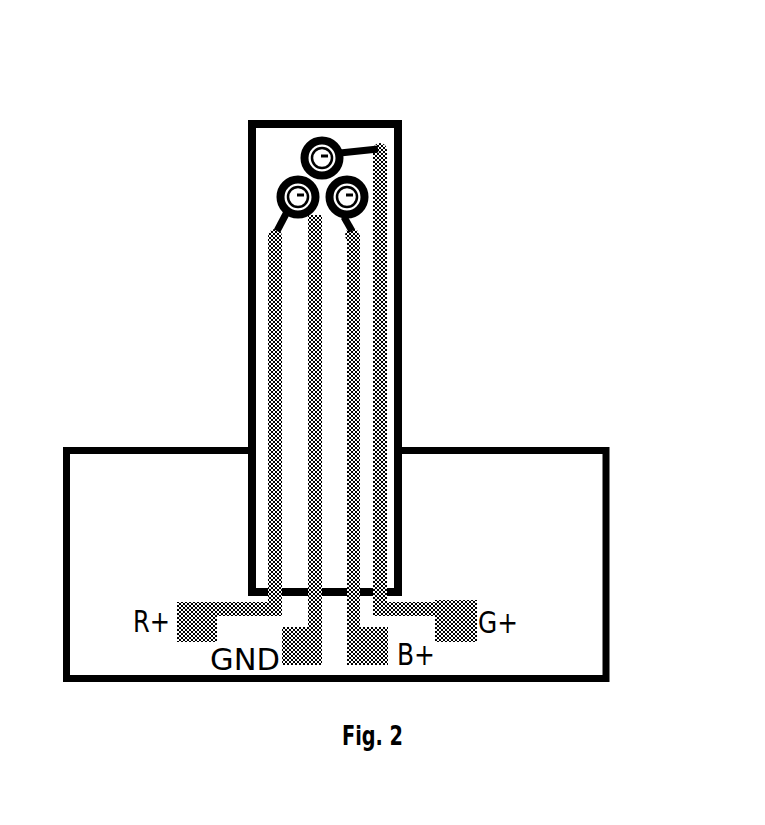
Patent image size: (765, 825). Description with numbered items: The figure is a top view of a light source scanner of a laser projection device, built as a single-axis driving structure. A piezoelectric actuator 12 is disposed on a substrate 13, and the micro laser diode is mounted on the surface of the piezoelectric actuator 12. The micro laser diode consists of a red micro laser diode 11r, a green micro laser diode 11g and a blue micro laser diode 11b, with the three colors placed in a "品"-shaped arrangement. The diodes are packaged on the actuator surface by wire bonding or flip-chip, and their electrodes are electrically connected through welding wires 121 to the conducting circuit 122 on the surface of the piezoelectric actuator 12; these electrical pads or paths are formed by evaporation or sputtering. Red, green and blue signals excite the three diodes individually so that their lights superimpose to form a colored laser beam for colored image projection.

The green micro laser diode 11g is at (335, 105).
The red micro laser diode 11r is at (227, 160).
The blue micro laser diode 11b is at (437, 182).
The piezoelectric actuator 12 is at (402, 350).
The welding wires 121 is at (222, 230).
The conducting circuit 122 is at (228, 327).
The substrate 13 is at (502, 462).